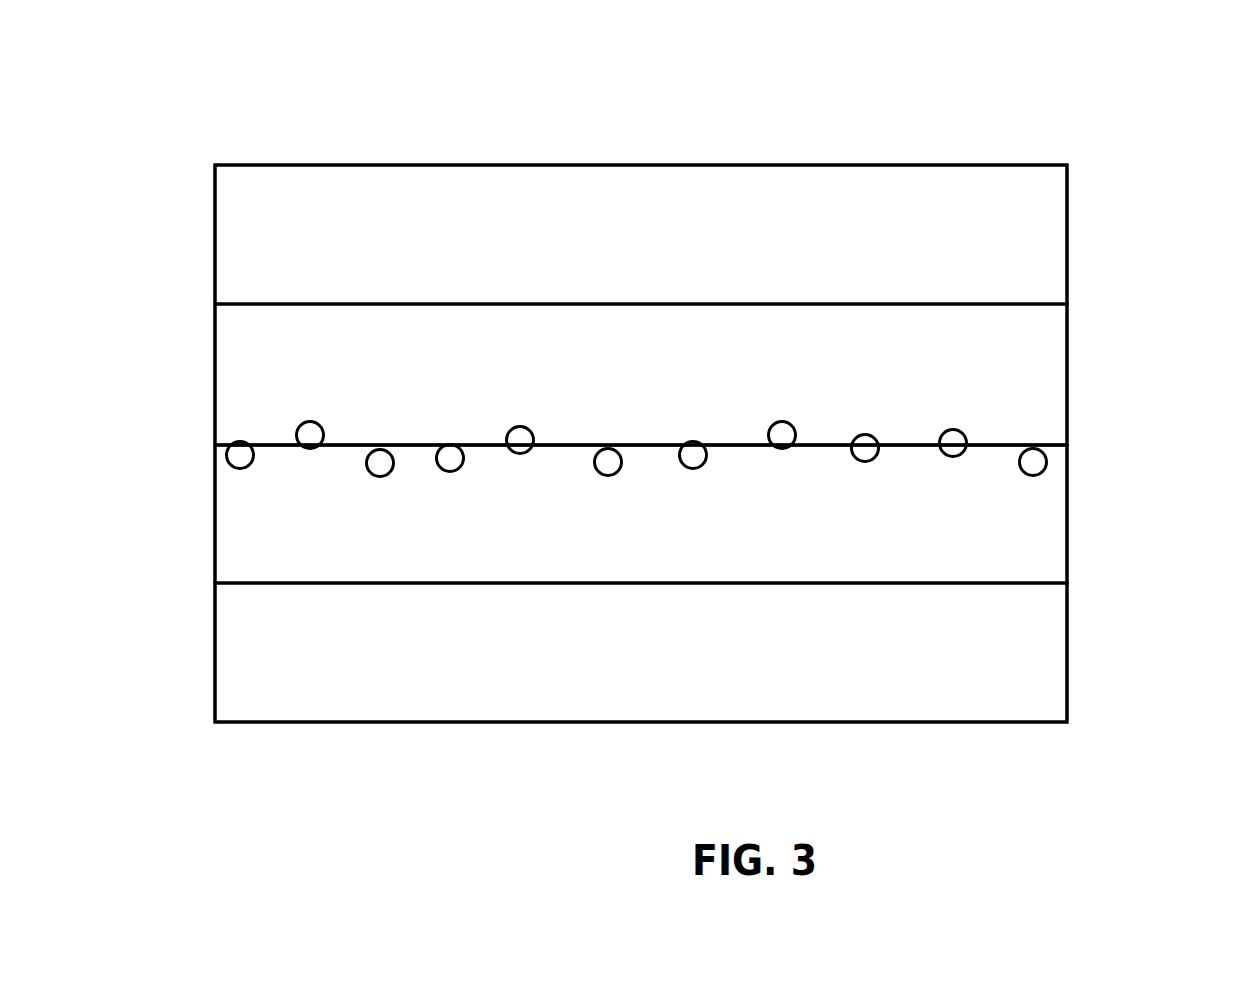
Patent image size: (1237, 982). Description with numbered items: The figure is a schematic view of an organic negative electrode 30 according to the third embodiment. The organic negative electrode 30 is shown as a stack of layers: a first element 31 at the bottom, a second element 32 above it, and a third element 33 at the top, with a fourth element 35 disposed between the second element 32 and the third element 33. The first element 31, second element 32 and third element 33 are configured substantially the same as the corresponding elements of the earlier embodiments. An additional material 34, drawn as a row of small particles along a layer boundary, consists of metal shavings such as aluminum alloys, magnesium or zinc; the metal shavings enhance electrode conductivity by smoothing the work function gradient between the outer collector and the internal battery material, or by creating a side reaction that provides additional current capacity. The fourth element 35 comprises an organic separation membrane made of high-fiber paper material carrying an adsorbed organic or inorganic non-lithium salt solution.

The organic negative electrode 30 is at (432, 158).
The first element 31 is at (1005, 643).
The second element 32 is at (1005, 522).
The third element 33 is at (1005, 235).
The additional material 34 is at (1075, 461).
The fourth element 35 is at (1005, 365).